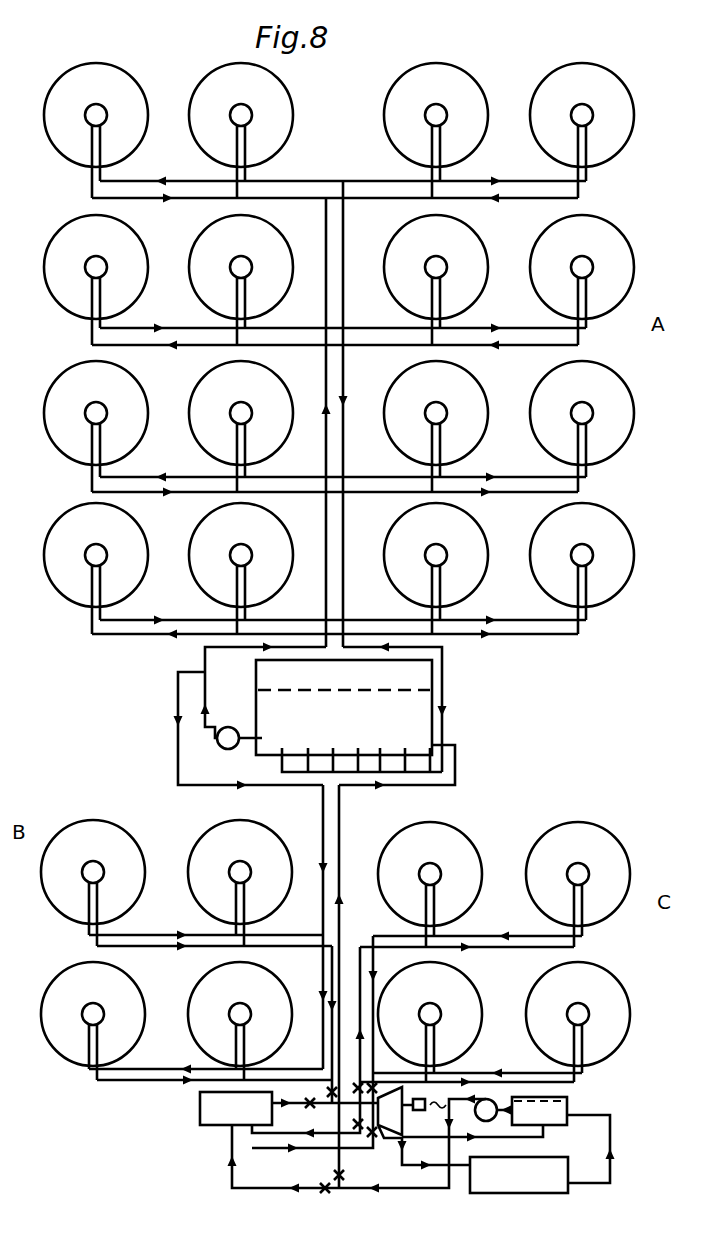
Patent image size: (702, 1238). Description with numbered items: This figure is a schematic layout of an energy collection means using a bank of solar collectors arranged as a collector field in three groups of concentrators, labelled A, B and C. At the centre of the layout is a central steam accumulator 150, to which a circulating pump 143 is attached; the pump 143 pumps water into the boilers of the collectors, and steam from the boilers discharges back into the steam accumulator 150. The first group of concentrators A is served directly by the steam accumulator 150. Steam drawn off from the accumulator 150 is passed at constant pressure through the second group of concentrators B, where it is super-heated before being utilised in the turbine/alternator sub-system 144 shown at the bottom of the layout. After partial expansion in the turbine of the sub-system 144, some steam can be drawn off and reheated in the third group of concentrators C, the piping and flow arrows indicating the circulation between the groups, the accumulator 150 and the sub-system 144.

The circulating pump 143 is at (223, 747).
The steam accumulator 150 is at (349, 716).
The turbine/alternator sub-system 144 is at (402, 1086).